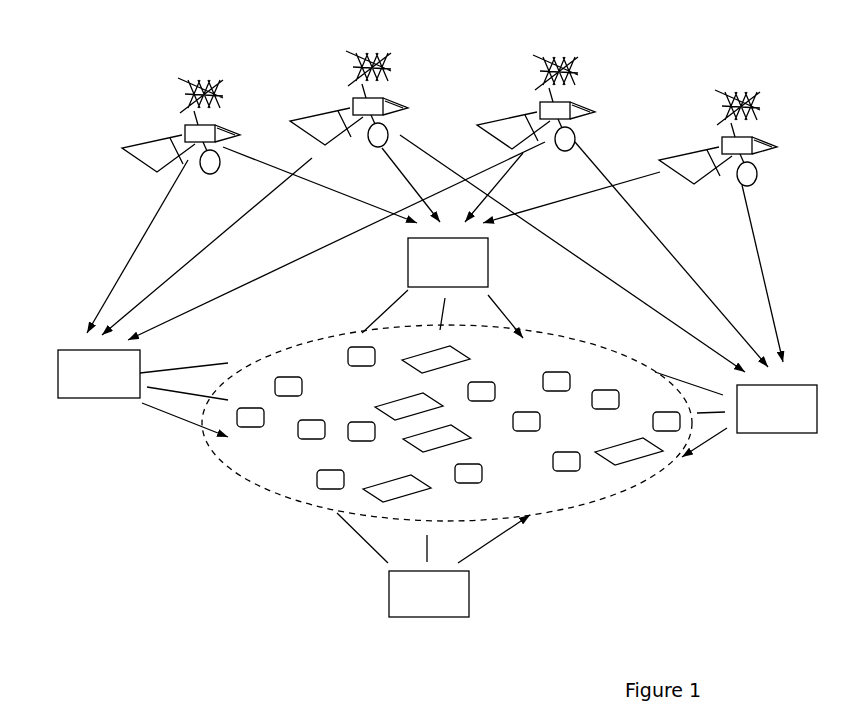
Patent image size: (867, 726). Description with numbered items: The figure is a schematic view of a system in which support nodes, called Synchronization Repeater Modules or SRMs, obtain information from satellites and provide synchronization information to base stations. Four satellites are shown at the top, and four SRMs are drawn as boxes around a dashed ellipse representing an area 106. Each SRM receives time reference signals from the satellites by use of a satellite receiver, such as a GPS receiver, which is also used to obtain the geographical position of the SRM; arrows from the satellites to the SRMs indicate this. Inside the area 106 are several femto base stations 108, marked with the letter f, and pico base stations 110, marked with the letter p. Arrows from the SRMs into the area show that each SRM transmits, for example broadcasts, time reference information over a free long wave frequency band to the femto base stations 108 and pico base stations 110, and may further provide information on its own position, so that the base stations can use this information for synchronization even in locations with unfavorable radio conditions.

The area 106 is at (220, 463).
The femto base station 108 is at (567, 473).
The pico base station 110 is at (633, 465).